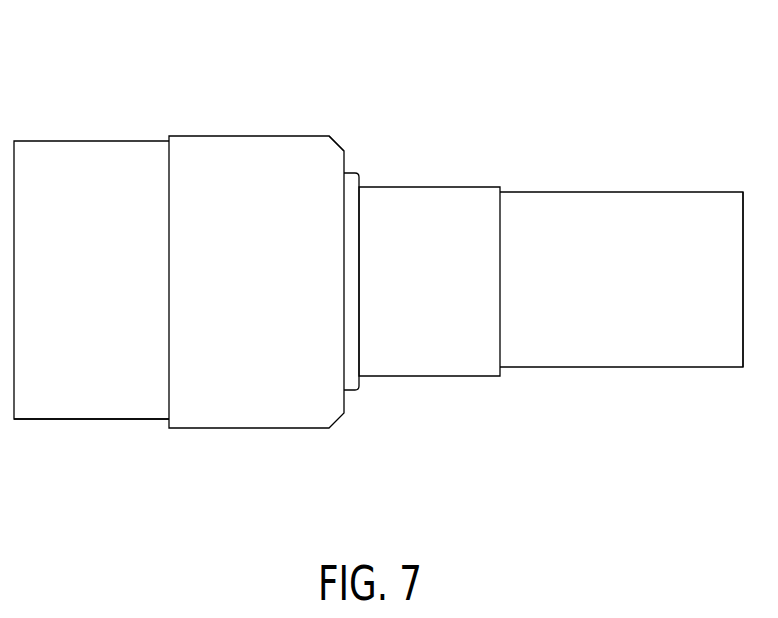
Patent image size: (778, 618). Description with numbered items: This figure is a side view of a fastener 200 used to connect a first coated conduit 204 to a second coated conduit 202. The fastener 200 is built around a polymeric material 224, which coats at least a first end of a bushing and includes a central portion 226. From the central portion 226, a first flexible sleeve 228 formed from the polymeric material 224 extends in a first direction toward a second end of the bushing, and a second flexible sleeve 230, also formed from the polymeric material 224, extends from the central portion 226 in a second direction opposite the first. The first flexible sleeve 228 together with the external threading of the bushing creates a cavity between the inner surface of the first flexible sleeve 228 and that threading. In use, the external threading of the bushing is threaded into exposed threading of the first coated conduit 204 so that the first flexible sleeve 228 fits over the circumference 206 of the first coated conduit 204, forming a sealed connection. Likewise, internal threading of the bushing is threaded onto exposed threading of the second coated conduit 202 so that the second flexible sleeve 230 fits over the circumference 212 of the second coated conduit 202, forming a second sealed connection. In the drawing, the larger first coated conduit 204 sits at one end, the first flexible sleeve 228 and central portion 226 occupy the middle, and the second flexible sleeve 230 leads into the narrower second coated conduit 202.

The fastener 200 is at (353, 107).
The second coated conduit 202 is at (622, 373).
The first coated conduit 204 is at (70, 427).
The circumference of first coated conduit 206 is at (125, 407).
The circumference of second coated conduit 212 is at (702, 347).
The polymeric material 224 is at (303, 128).
The central portion 226 is at (353, 398).
The first flexible sleeve 228 is at (200, 147).
The second flexible sleeve 230 is at (453, 197).